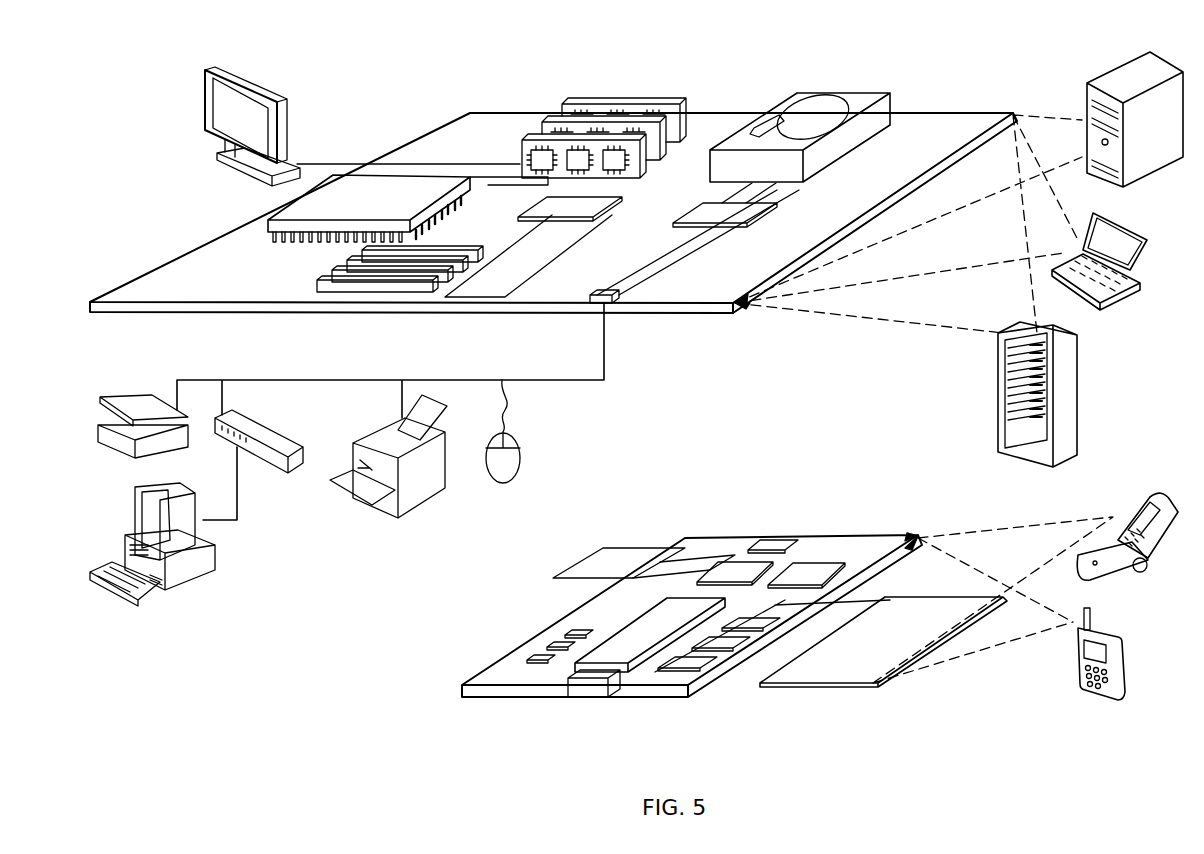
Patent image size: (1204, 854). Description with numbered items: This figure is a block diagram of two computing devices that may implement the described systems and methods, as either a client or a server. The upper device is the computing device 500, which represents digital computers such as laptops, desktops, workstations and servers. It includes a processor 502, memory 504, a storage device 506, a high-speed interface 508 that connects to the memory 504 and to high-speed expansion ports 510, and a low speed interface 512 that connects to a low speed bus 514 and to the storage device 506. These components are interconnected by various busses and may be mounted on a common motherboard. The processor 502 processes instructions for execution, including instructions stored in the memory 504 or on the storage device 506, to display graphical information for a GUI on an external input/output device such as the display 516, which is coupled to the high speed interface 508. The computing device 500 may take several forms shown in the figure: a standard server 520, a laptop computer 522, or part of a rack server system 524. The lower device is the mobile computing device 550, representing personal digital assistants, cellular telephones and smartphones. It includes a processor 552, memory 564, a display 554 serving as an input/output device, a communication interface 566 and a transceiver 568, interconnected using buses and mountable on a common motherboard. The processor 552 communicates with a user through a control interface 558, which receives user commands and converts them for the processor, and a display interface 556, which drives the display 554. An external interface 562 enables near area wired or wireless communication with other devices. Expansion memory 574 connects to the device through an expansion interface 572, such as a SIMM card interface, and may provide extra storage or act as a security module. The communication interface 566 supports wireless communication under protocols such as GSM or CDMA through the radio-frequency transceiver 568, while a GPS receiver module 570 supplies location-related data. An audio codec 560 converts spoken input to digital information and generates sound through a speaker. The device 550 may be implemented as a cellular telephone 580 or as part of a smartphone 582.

The computing device 500 is at (391, 90).
The processor 502 is at (268, 222).
The memory 504 is at (583, 106).
The storage device 506 is at (798, 100).
The high-speed interface 508 is at (548, 208).
The high-speed expansion ports 510 is at (330, 283).
The low speed interface 512 is at (708, 206).
The low speed bus 514 is at (608, 304).
The display 516 is at (207, 64).
The standard server 520 is at (1086, 100).
The laptop computer 522 is at (1147, 236).
The rack server system 524 is at (1000, 417).
The computing device 550 is at (437, 693).
The processor 552 is at (622, 665).
The display 554 is at (850, 672).
The display interface 556 is at (690, 660).
The control interface 558 is at (720, 645).
The audio codec 560 is at (745, 622).
The external interface 562 is at (592, 690).
The memory 564 is at (545, 650).
The communication interface 566 is at (733, 575).
The transceiver 568 is at (808, 572).
The GPS receiver module 570 is at (786, 548).
The expansion interface 572 is at (672, 548).
The expansion memory 574 is at (603, 550).
The cellular telephone 580 is at (1120, 500).
The smartphone 582 is at (1078, 660).